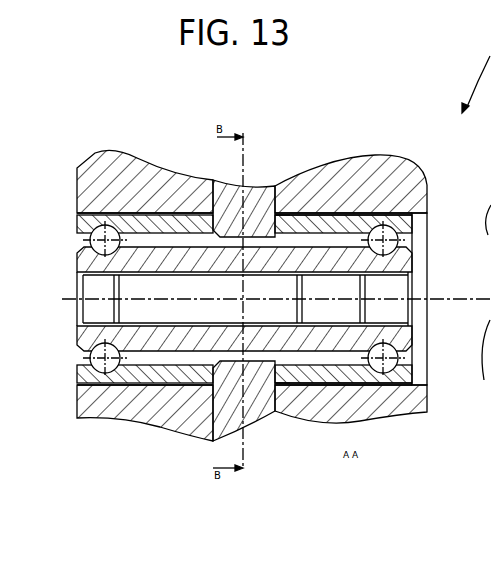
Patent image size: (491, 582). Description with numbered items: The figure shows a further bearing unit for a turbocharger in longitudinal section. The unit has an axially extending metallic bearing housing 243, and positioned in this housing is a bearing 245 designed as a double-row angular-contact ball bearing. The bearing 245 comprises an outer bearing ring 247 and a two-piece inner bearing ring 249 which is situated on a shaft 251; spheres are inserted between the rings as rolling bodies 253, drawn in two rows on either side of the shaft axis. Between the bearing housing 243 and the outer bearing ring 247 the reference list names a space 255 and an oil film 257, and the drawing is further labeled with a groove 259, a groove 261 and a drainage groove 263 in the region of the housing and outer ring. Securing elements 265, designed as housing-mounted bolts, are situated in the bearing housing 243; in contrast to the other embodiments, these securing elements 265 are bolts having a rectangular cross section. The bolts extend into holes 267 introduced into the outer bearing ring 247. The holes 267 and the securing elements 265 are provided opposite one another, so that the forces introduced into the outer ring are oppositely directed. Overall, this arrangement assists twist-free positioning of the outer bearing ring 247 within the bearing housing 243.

The bearing housing 243 is at (84, 175).
The bearing 245 is at (406, 230).
The outer bearing ring 247 is at (394, 222).
The inner bearing ring 249 is at (101, 263).
The shaft 251 is at (95, 307).
The rolling body 253 is at (110, 244).
The space 255 is at (316, 217).
The oil film 257 is at (322, 541).
The groove 259 is at (172, 221).
The groove 261 is at (325, 218).
The drainage groove 263 is at (208, 221).
The securing element 265 is at (276, 213).
The hole 267 is at (203, 176).